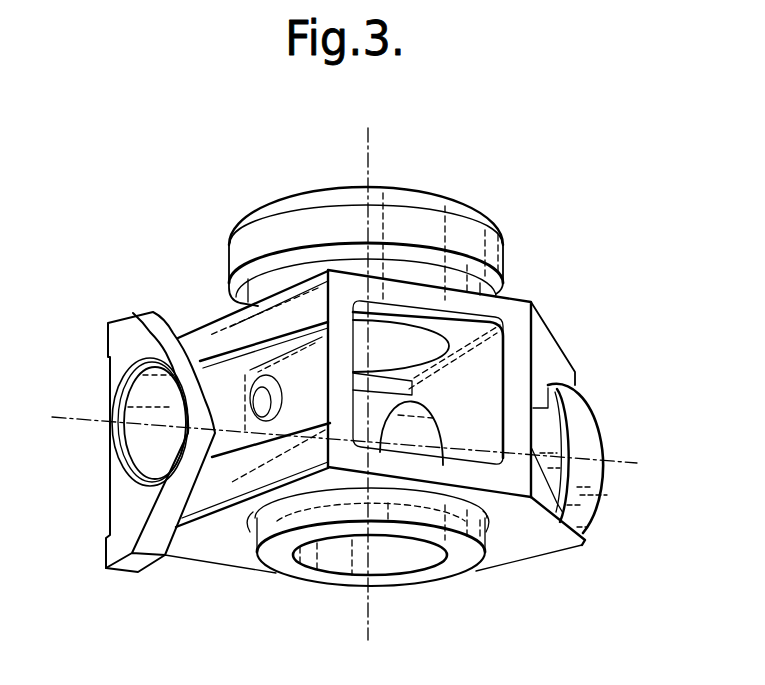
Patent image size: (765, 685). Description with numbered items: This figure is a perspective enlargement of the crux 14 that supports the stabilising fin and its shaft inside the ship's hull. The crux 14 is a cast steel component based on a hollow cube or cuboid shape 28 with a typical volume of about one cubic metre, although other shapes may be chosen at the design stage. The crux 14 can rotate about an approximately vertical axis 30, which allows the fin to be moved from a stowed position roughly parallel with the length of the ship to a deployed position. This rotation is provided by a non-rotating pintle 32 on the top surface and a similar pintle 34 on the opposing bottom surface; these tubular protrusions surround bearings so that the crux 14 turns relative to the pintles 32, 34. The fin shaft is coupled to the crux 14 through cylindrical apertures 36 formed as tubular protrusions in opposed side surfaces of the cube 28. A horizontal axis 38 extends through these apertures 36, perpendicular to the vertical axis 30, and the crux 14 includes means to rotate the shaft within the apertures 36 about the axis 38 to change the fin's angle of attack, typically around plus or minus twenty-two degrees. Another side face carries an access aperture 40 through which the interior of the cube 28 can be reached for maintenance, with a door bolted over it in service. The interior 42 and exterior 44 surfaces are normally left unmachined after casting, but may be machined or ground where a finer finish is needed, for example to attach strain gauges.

The crux 14 is at (520, 173).
The hollow cube or cuboid shape 28 is at (513, 300).
The vertical axis 30 is at (368, 142).
The pintle 32 is at (272, 238).
The pintle 34 is at (413, 553).
The cylindrical apertures 36 is at (115, 453).
The horizontal axis 38 is at (637, 462).
The access aperture 40 is at (488, 457).
The interior surface 42 is at (498, 350).
The exterior surface 44 is at (297, 372).